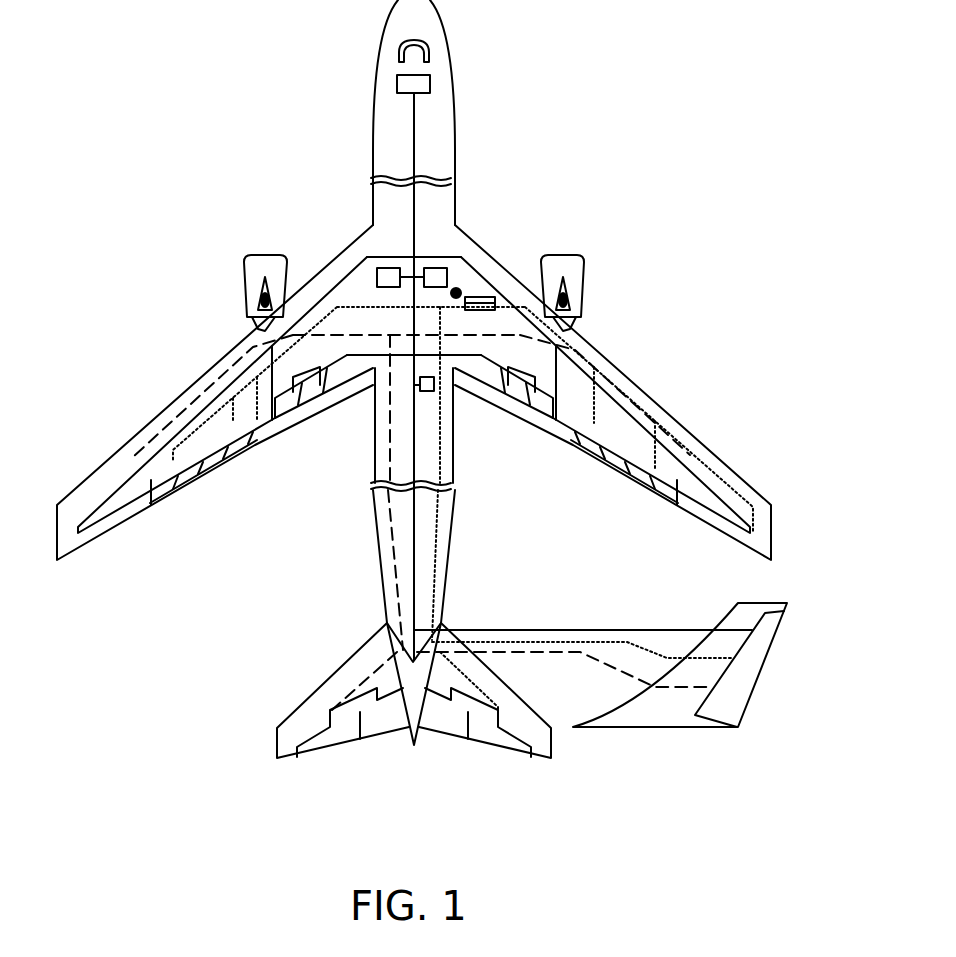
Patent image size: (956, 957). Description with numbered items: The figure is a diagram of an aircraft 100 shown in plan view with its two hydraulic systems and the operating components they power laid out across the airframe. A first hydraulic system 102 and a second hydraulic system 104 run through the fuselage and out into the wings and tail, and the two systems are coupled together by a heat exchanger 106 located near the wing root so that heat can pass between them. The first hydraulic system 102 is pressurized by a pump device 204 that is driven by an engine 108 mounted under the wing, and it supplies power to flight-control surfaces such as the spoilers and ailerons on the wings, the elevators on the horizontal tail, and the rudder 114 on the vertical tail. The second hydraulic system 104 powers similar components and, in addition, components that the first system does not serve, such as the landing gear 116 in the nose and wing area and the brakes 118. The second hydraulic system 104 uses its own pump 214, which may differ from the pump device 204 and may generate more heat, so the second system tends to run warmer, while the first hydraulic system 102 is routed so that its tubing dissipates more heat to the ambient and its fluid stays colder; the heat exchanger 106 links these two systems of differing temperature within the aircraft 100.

The aircraft 100 is at (234, 60).
The first hydraulic system 102 is at (628, 390).
The second hydraulic system 104 is at (478, 297).
The heat exchanger 106 is at (490, 297).
The engine 108 is at (575, 264).
The rudder 114 is at (757, 650).
The landing gear 116 is at (431, 82).
The brakes 118 is at (426, 391).
The pump device 204 is at (567, 296).
The pump 214 is at (457, 288).